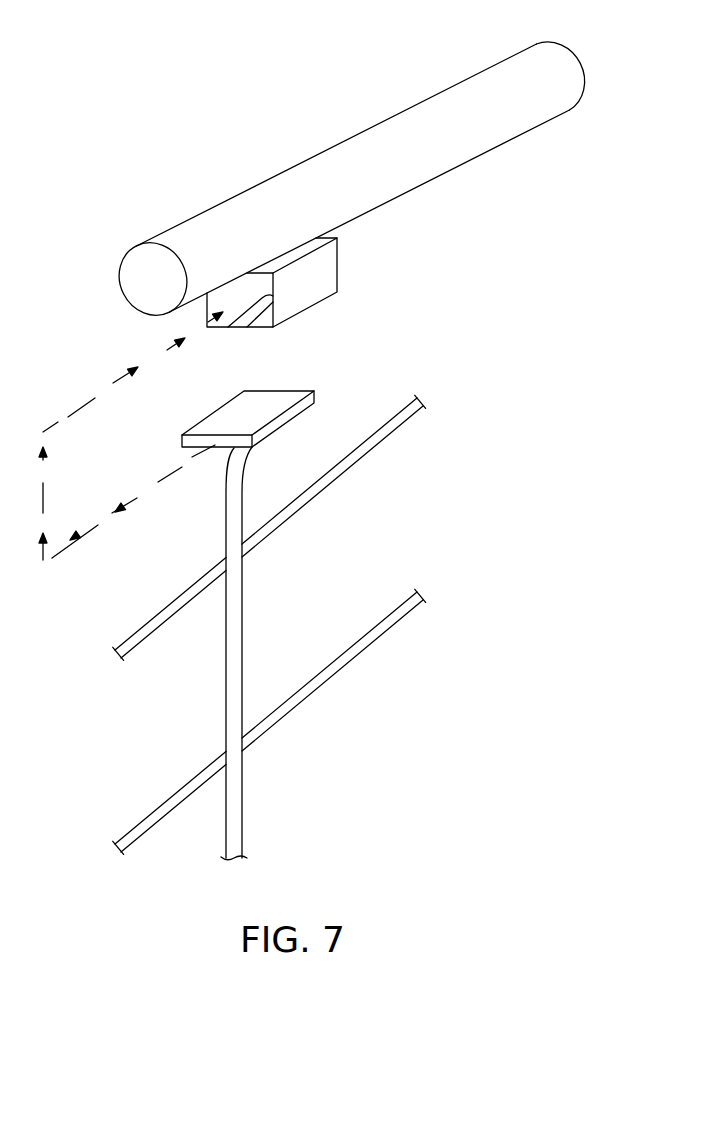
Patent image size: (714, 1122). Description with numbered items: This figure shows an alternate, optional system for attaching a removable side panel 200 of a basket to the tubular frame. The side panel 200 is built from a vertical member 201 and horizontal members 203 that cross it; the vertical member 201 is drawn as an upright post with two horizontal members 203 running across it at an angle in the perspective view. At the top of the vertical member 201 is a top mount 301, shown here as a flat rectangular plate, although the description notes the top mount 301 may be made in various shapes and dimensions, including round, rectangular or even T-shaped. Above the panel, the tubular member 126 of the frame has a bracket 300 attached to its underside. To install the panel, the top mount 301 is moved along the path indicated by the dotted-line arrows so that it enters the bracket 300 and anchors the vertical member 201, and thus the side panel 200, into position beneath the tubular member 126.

The tubular member 126 is at (345, 148).
The bracket 300 is at (302, 285).
The top mount 301 is at (183, 443).
The side panel 200 is at (331, 627).
The vertical member 201 is at (227, 525).
The horizontal member 203 is at (303, 498).